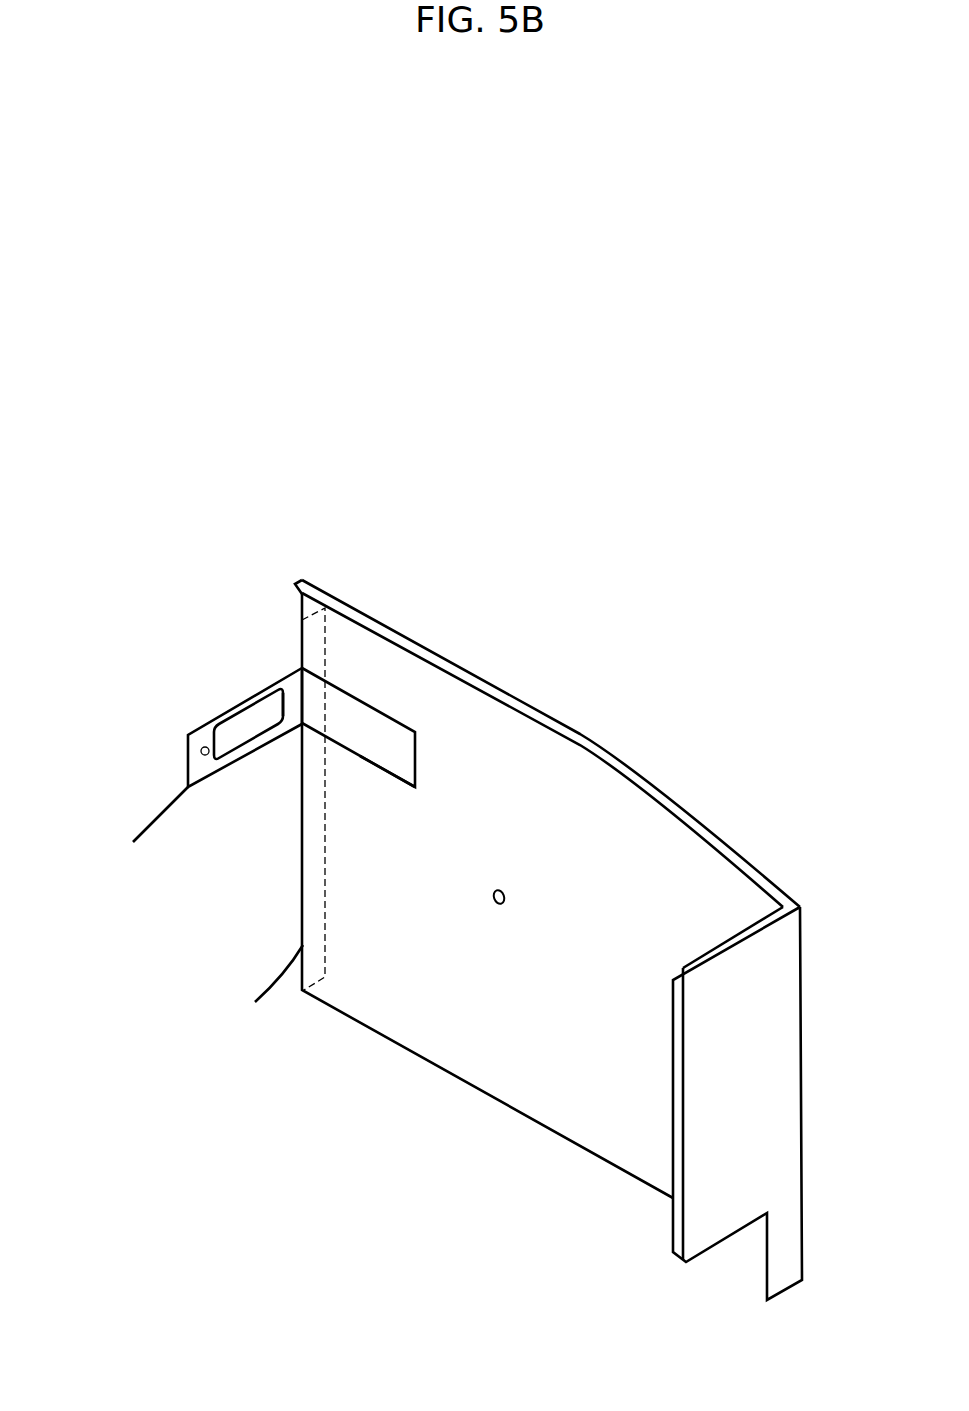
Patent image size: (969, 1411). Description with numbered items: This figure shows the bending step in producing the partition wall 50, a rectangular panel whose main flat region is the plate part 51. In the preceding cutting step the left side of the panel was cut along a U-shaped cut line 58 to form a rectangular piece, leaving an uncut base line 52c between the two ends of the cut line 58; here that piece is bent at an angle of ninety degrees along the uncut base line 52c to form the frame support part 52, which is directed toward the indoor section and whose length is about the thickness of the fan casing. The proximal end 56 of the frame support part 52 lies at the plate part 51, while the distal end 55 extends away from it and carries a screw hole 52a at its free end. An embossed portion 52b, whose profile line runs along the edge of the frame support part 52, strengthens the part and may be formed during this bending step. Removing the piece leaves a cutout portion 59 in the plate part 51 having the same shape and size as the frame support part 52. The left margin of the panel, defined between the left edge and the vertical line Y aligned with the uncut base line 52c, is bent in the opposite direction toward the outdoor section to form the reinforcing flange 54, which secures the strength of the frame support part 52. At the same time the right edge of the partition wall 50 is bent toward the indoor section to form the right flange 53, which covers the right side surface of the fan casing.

The partition wall 50 is at (481, 666).
The plate part 51 is at (602, 757).
The frame support part 52 is at (203, 707).
The screw hole 52a is at (204, 755).
The embossed portion 52b is at (233, 743).
The uncut base line 52c is at (296, 688).
The right flange 53 is at (698, 1235).
The reinforcing flange 54 is at (317, 635).
The distal end 55 is at (150, 835).
The proximal end 56 is at (292, 712).
The cut line 58 is at (348, 693).
The cutout portion 59 is at (378, 748).
The vertical line Y is at (263, 989).